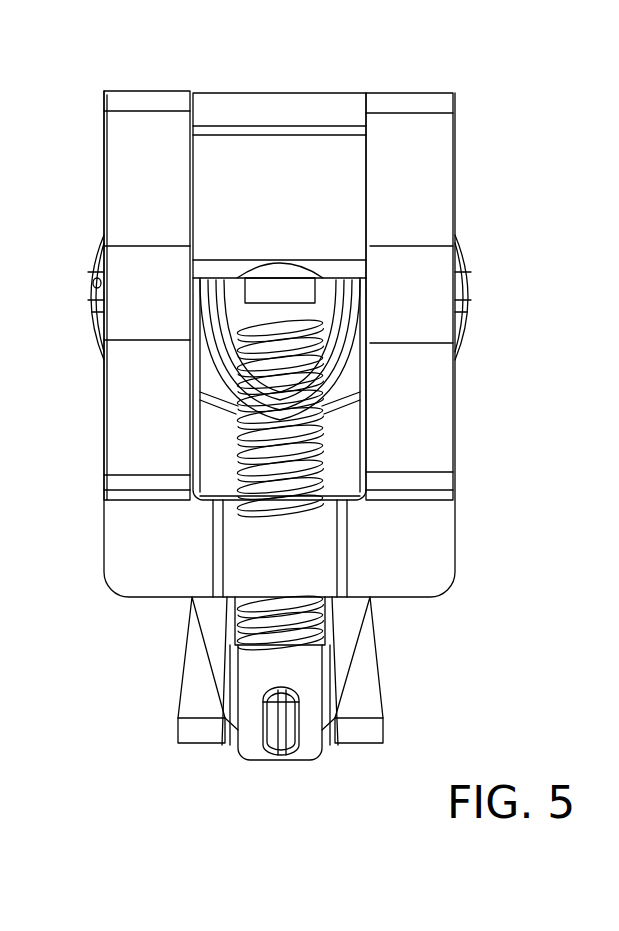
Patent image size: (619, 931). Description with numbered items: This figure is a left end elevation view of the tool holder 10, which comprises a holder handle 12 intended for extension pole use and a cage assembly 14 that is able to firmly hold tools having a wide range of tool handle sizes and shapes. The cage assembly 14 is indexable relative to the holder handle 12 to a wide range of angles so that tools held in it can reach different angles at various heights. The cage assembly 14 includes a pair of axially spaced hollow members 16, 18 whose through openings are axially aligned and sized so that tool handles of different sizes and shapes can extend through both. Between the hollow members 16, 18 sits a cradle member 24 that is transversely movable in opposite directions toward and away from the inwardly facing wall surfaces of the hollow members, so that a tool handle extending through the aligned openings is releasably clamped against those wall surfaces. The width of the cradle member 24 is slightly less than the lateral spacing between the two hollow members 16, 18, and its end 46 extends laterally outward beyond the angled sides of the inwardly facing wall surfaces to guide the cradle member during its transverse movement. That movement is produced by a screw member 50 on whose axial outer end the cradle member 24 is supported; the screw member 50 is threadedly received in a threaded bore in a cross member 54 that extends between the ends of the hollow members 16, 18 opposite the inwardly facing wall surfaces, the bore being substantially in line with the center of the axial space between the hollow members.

The tool holder 10 is at (462, 78).
The holder handle 12 is at (358, 698).
The cage assembly 14 is at (500, 148).
The hollow member 16 is at (134, 108).
The hollow member 18 is at (425, 113).
The cradle member 24 is at (340, 228).
The end of cradle member 46 is at (282, 107).
The screw member 50 is at (330, 462).
The cross member 54 is at (293, 562).